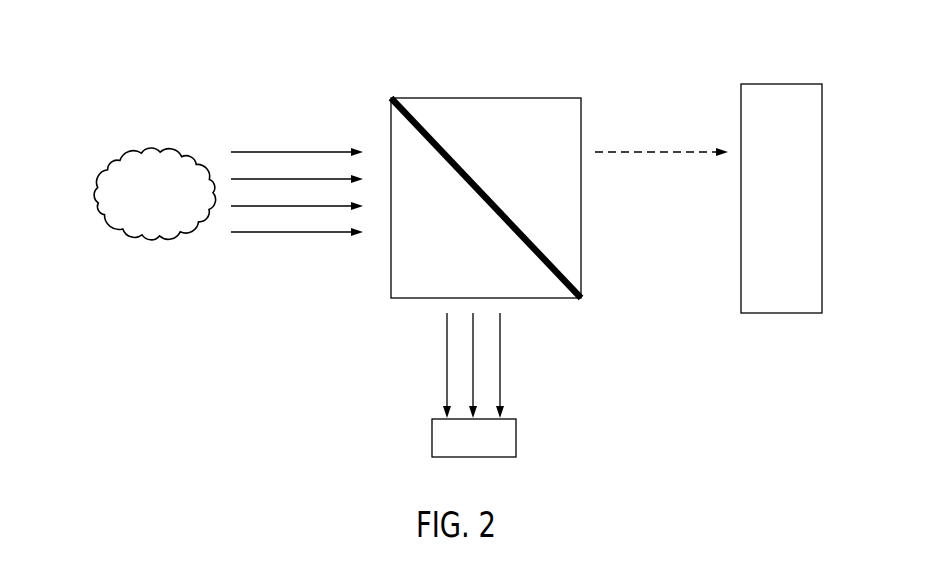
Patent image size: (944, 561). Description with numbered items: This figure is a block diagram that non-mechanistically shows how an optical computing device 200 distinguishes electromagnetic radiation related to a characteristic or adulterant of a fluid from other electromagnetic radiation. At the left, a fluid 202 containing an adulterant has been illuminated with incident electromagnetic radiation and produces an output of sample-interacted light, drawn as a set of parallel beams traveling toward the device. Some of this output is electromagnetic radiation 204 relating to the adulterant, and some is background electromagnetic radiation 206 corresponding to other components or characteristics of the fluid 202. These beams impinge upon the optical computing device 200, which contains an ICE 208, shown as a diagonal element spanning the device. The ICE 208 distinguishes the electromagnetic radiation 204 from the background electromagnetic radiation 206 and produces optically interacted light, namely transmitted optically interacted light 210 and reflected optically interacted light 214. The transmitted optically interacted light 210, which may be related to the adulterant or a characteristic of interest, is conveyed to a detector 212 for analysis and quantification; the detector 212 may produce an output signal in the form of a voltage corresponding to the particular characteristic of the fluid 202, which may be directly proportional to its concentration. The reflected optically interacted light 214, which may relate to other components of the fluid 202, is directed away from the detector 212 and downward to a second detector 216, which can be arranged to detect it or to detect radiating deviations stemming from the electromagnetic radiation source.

The optical computing device 200 is at (451, 86).
The fluid 202 is at (103, 215).
The electromagnetic radiation 204 is at (302, 162).
The background electromagnetic radiation 206 is at (290, 225).
The ICE 208 is at (467, 172).
The transmitted optically interacted light 210 is at (640, 152).
The detector 212 is at (765, 211).
The reflected optically interacted light 214 is at (500, 350).
The second detector 216 is at (456, 449).